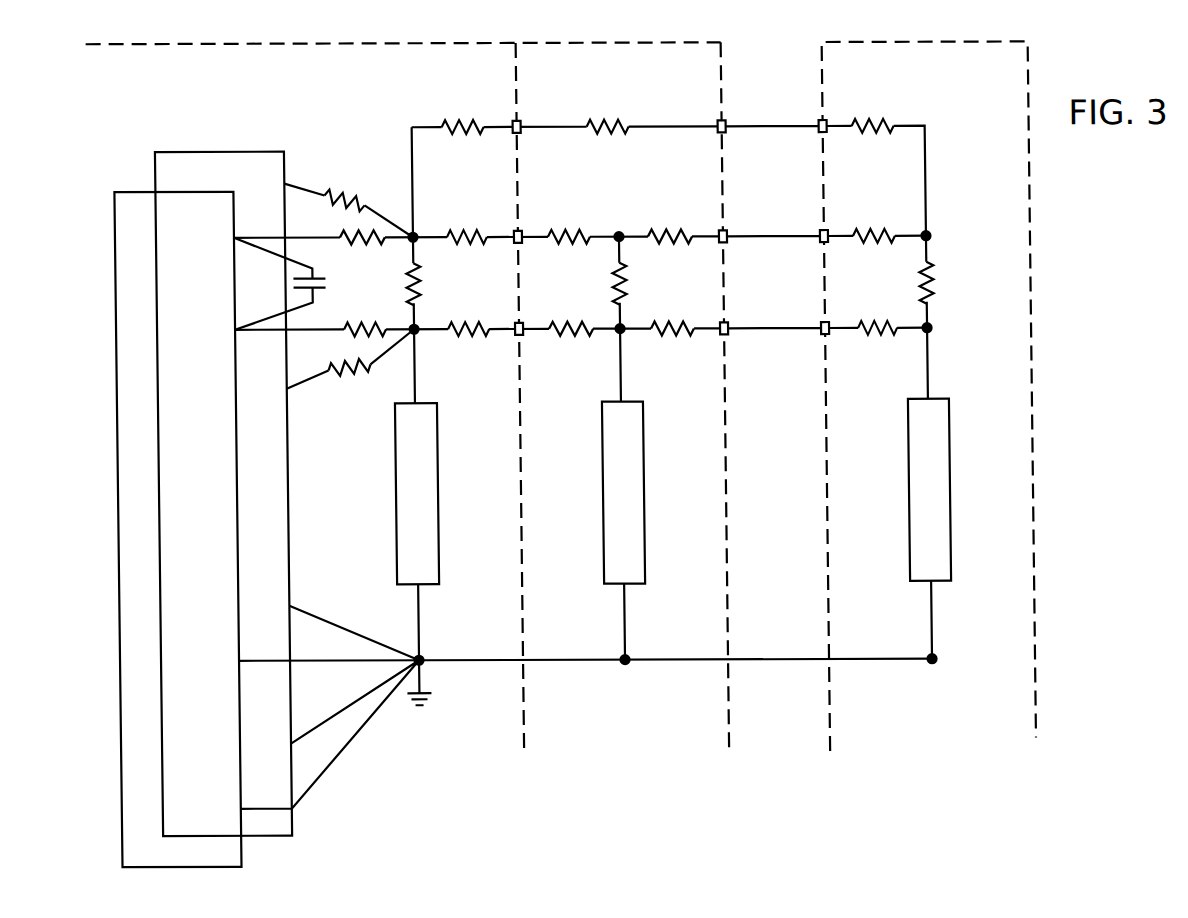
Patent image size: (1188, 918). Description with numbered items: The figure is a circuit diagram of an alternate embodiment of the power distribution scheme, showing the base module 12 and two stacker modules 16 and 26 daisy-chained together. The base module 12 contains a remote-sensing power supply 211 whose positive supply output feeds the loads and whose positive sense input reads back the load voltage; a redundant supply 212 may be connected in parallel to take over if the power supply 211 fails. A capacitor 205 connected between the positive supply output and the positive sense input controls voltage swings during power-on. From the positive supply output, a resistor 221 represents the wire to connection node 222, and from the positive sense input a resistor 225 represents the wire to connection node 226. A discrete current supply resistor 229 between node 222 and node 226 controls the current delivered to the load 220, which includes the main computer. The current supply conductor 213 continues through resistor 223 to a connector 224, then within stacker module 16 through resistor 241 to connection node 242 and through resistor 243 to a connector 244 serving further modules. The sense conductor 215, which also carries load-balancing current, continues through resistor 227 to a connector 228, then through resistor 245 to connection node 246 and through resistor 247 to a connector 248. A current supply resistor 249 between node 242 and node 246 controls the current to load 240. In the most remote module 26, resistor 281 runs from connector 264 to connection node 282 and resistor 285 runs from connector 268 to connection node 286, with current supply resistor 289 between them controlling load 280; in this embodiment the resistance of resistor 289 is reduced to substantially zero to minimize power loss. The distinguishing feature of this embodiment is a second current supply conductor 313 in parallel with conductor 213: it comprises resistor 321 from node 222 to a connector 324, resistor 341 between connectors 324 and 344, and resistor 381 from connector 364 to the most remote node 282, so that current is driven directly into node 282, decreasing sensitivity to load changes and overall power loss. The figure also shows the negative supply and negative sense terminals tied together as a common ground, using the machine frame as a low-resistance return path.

The base module 12 is at (368, 37).
The stacker module 16 is at (728, 68).
The stacker module 26 is at (1035, 379).
The power supply 211 is at (113, 207).
The redundant supply 212 is at (155, 167).
The capacitor 205 is at (323, 290).
The resistor 221 is at (363, 243).
The resistor 225 is at (362, 323).
The connection node 222 is at (414, 233).
The connection node 226 is at (417, 335).
The current supply resistor 229 is at (420, 287).
The resistor 223 is at (468, 233).
The connector 224 is at (522, 233).
The resistor 227 is at (480, 318).
The connector 228 is at (522, 335).
The resistor 241 is at (563, 238).
The connection node 242 is at (613, 232).
The resistor 243 is at (672, 233).
The connector 244 is at (728, 233).
The resistor 245 is at (563, 318).
The connection node 246 is at (623, 333).
The resistor 247 is at (667, 318).
The connector 248 is at (730, 335).
The current supply resistor 249 is at (628, 283).
The connector 264 is at (832, 233).
The connector 268 is at (828, 334).
The resistor 281 is at (877, 227).
The connection node 282 is at (928, 230).
The resistor 285 is at (858, 317).
The connection node 286 is at (930, 334).
The current supply resistor 289 is at (930, 278).
The current supply conductor 213 is at (772, 240).
The sense conductor 215 is at (770, 325).
The second current supply conductor 313 is at (773, 135).
The resistor 321 is at (455, 120).
The connector 324 is at (522, 120).
The resistor 341 is at (618, 122).
The connector 344 is at (727, 120).
The connector 364 is at (828, 120).
The resistor 381 is at (863, 132).
The load 220 is at (437, 482).
The load 240 is at (645, 480).
The load 280 is at (951, 477).